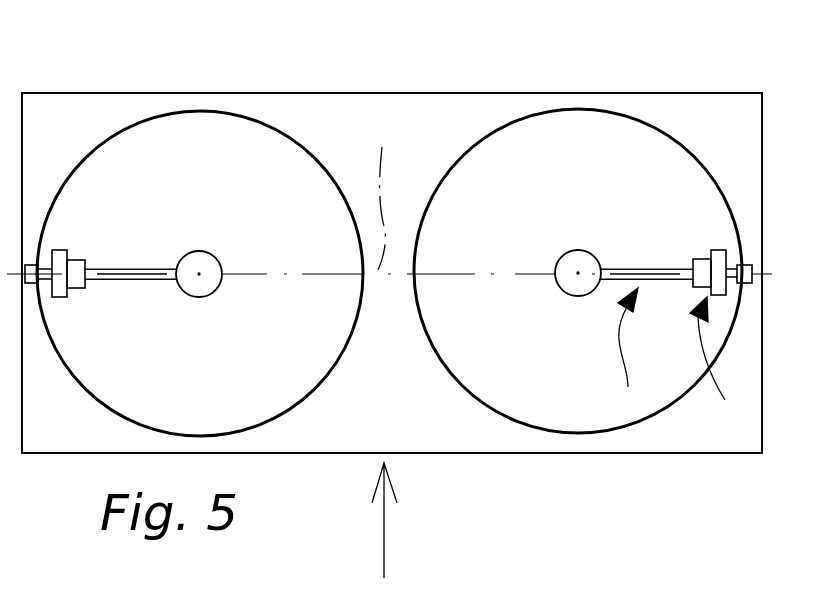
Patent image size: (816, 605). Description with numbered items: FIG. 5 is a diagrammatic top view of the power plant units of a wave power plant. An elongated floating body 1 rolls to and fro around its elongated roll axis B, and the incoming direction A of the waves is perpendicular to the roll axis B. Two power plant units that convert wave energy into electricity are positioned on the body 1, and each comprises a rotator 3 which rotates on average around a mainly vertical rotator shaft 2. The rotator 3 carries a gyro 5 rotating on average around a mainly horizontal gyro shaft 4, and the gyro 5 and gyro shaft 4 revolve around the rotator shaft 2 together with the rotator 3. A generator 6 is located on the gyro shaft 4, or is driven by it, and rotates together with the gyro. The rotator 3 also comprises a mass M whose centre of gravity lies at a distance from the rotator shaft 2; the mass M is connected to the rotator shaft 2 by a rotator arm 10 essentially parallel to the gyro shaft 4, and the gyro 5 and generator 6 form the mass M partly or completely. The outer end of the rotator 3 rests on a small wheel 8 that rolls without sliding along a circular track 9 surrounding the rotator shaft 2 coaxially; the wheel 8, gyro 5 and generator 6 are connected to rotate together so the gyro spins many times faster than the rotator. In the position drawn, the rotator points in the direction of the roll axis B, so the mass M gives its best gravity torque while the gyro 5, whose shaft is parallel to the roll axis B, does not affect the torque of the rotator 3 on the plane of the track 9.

The floating body 1 is at (683, 440).
The rotator shaft 2 is at (578, 273).
The rotator 3 is at (625, 353).
The gyro shaft 4 is at (716, 295).
The gyro 5 is at (720, 253).
The generator 6 is at (700, 260).
The wheel 8 is at (747, 263).
The circular track 9 is at (616, 113).
The rotator arm 10 is at (632, 267).
The incoming direction of the waves A is at (392, 523).
The roll axis B is at (383, 192).
The mass M is at (711, 366).